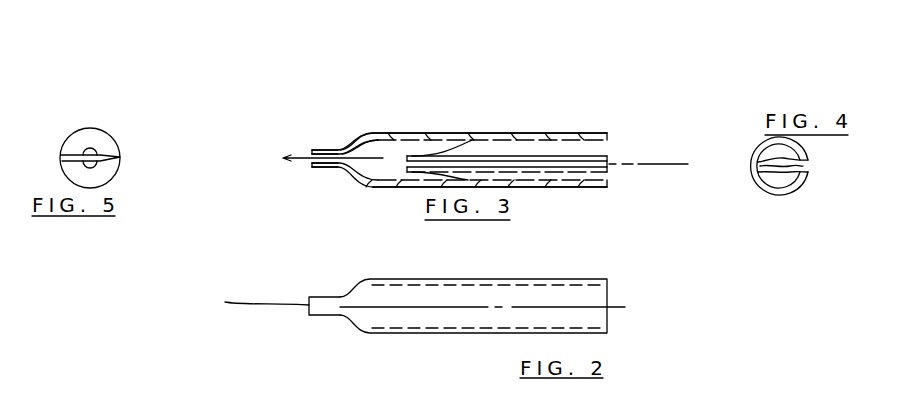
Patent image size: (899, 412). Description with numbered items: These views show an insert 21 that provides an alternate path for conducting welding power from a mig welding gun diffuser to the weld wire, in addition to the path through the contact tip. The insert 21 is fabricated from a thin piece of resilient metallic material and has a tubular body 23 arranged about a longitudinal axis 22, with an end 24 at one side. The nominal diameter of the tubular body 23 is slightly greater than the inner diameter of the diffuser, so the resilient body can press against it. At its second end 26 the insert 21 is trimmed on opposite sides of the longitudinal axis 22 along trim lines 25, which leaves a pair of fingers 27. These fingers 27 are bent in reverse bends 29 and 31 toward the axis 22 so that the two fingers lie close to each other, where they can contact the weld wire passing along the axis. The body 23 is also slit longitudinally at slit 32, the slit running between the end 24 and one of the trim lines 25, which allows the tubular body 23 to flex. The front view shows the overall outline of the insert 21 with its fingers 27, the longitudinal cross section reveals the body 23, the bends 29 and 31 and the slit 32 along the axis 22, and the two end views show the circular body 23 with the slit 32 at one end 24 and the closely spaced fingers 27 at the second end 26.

In FIG. 3, the insert 21 is at (448, 136).
In FIG. 4, the insert 21 is at (786, 194).
In FIG. 3, the longitudinal axis 22 is at (653, 165).
In FIG. 3, the tubular body 23 is at (527, 133).
In FIG. 2, the end 24 is at (608, 320).
In FIG. 2, the trim lines 25 is at (325, 297).
In FIG. 3, the second end 26 is at (308, 167).
In FIG. 5, the fingers 27 is at (91, 148).
In FIG. 2, the fingers 27 is at (249, 301).
In FIG. 3, the reverse bend 29 is at (366, 137).
In FIG. 3, the reverse bend 31 is at (348, 150).
In FIG. 3, the slit 32 is at (563, 164).